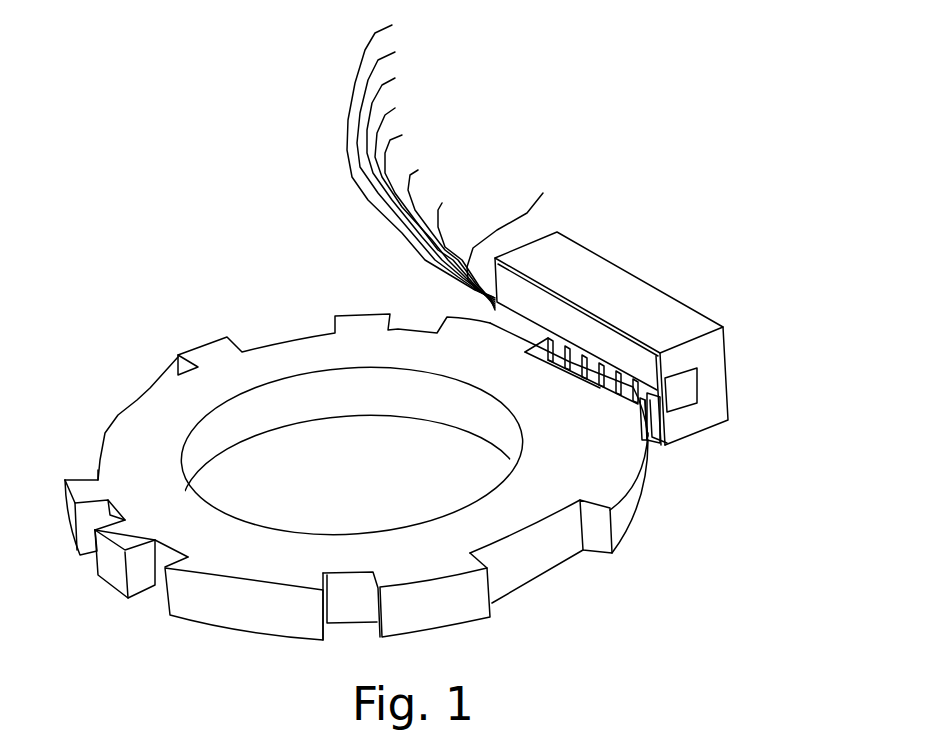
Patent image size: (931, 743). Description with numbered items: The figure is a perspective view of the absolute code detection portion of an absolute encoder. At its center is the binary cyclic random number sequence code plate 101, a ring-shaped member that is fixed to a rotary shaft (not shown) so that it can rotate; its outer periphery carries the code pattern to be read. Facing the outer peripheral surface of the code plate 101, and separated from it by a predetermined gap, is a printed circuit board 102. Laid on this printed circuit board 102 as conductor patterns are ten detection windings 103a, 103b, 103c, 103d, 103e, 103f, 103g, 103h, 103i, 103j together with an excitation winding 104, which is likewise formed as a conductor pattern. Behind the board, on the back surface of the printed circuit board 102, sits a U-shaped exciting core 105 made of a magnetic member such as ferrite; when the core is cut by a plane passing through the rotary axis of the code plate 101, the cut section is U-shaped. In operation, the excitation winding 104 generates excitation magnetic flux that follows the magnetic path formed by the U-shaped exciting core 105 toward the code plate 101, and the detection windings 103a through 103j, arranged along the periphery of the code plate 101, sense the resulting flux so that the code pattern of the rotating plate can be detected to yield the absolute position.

The binary cyclic random number sequence code plate 101 is at (187, 405).
The printed circuit board 102 is at (662, 390).
The detection winding 103a is at (392, 25).
The detection winding 103b is at (395, 52).
The detection winding 103c is at (395, 78).
The detection winding 103d is at (395, 108).
The detection winding 103e is at (402, 135).
The detection winding 103f is at (418, 170).
The detection winding 103g is at (442, 203).
The detection winding 103h is at (543, 193).
The detection winding 103i is at (645, 433).
The detection winding 103j is at (655, 438).
The excitation winding 104 is at (582, 246).
The U-shaped exciting core 105 is at (715, 370).